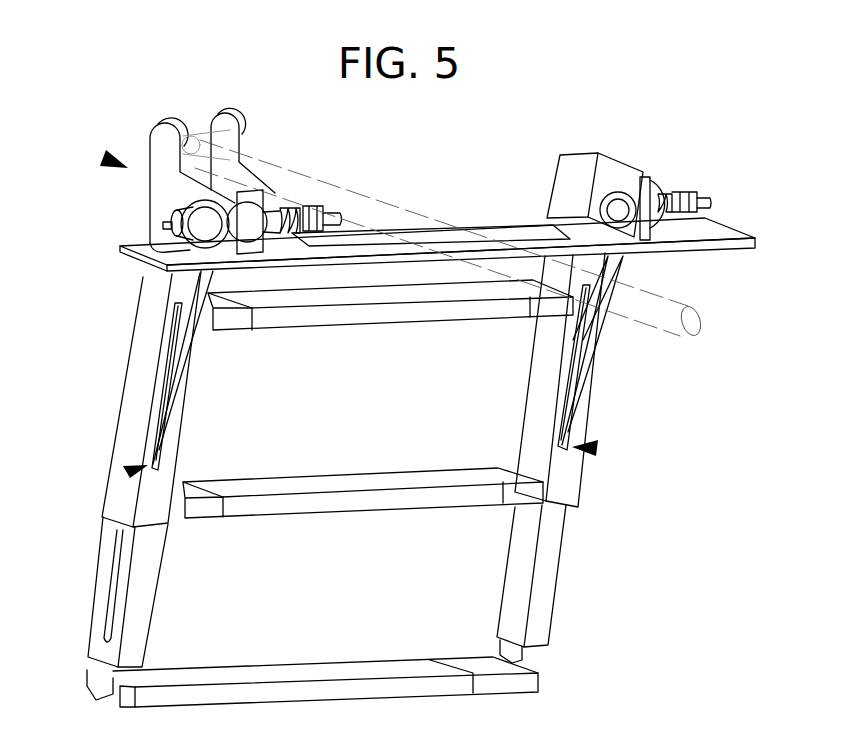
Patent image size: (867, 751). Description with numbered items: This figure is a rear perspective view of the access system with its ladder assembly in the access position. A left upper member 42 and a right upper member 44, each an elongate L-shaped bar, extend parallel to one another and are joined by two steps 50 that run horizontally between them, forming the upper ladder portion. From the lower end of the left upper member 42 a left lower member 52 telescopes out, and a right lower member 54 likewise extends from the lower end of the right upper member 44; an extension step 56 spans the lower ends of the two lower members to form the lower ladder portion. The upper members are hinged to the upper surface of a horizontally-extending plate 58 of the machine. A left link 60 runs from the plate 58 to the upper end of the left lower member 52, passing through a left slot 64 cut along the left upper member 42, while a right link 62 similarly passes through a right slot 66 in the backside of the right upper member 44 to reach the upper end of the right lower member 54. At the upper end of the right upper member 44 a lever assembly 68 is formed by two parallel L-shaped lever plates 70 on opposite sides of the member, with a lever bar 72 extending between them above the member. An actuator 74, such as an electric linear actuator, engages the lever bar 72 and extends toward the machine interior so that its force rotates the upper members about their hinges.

The left upper member 42 is at (584, 412).
The right upper member 44 is at (128, 386).
The steps 50 is at (362, 318).
The left lower member 52 is at (555, 578).
The right lower member 54 is at (143, 589).
The extension step 56 is at (342, 670).
The plate 58 is at (707, 233).
The left link 60 is at (591, 322).
The right link 62 is at (190, 351).
The left slot 64 is at (597, 449).
The right slot 66 is at (126, 471).
The lever assembly 68 is at (191, 154).
The lever plates 70 is at (158, 138).
The lever bar 72 is at (193, 142).
The actuator 74 is at (366, 200).